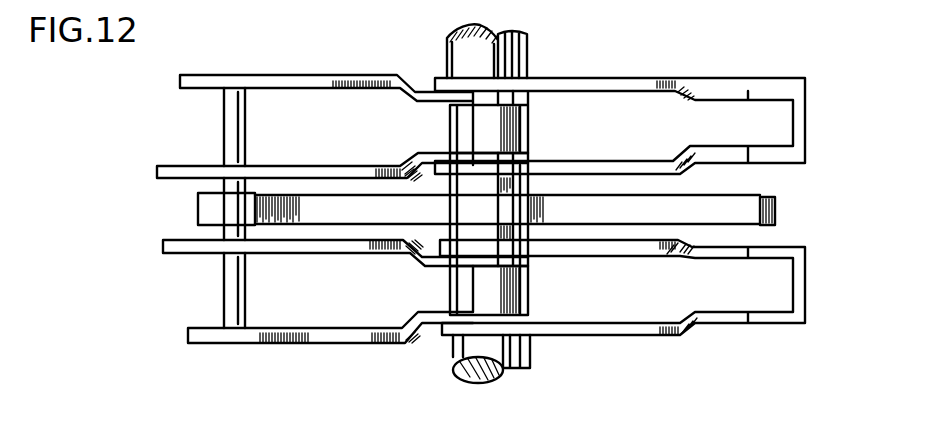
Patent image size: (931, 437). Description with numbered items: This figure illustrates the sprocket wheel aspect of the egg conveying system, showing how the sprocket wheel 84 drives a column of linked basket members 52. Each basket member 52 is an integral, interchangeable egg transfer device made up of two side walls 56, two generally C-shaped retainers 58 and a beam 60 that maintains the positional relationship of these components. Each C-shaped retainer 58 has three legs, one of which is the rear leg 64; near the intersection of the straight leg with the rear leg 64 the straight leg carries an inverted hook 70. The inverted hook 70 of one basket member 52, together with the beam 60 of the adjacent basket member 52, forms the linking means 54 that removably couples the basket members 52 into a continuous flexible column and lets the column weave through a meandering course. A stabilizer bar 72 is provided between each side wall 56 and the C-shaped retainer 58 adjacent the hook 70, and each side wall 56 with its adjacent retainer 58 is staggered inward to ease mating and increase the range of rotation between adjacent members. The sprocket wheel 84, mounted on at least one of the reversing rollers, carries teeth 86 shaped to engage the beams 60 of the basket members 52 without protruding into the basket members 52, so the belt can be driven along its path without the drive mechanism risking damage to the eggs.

The basket member 52 is at (266, 354).
The linking means 54 is at (542, 71).
The side wall 56 is at (384, 344).
The C-shaped retainer 58 is at (376, 158).
The beam 60 is at (232, 152).
The rear leg 64 is at (320, 254).
The inverted hook 70 is at (804, 142).
The stabilizer bar 72 is at (806, 292).
The sprocket wheel 84 is at (598, 210).
The teeth 86 is at (203, 212).